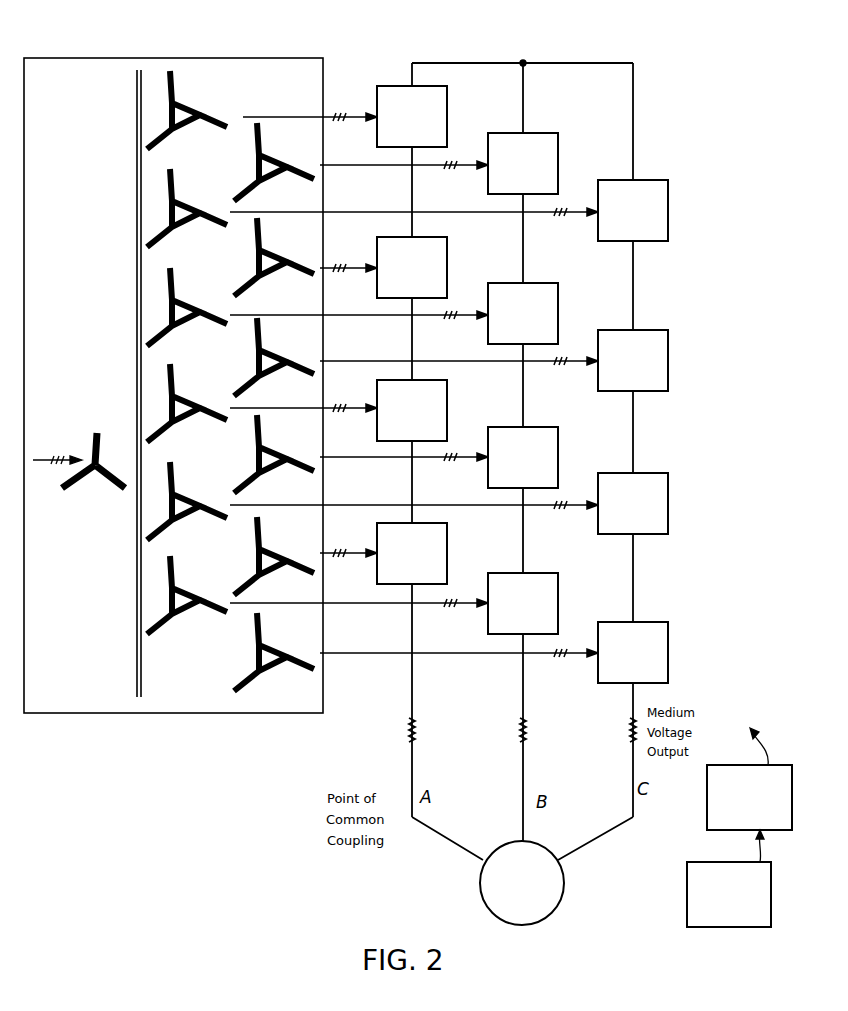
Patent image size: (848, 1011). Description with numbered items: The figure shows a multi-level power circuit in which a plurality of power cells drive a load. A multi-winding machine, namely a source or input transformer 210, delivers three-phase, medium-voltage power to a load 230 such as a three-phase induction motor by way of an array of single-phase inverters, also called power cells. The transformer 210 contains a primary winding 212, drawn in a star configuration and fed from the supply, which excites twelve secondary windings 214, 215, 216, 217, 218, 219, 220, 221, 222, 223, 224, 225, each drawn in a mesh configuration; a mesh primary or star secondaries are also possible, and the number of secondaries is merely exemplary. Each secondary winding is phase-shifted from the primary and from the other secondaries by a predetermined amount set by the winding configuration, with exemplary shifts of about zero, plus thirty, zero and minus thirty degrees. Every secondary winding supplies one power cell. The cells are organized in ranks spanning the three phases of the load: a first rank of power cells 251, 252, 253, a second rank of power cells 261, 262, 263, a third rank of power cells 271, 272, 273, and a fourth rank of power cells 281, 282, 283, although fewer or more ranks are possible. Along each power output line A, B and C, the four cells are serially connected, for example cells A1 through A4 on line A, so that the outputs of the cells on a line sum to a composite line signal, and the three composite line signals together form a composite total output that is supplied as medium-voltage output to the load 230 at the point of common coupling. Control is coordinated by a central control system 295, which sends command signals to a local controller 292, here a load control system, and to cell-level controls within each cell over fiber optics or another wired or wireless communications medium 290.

The input transformer 210 is at (83, 52).
The primary winding 212 is at (88, 427).
The secondary winding 214 is at (210, 91).
The secondary winding 215 is at (297, 149).
The secondary winding 216 is at (210, 193).
The secondary winding 217 is at (297, 241).
The secondary winding 218 is at (210, 291).
The secondary winding 219 is at (297, 339).
The secondary winding 220 is at (210, 381).
The secondary winding 221 is at (297, 438).
The secondary winding 222 is at (210, 481).
The secondary winding 223 is at (297, 533).
The secondary winding 224 is at (210, 578).
The secondary winding 225 is at (297, 634).
The load 230 is at (558, 905).
The power cell 251 is at (450, 116).
The power cell 252 is at (561, 166).
The power cell 253 is at (671, 212).
The power cell 261 is at (450, 267).
The power cell 262 is at (561, 312).
The power cell 263 is at (671, 359).
The power cell 271 is at (450, 417).
The power cell 272 is at (561, 472).
The power cell 273 is at (671, 506).
The power cell 281 is at (450, 561).
The power cell 282 is at (561, 619).
The power cell 283 is at (671, 656).
The communications medium 290 is at (745, 850).
The local controller 292 is at (703, 788).
The central control system 295 is at (699, 930).